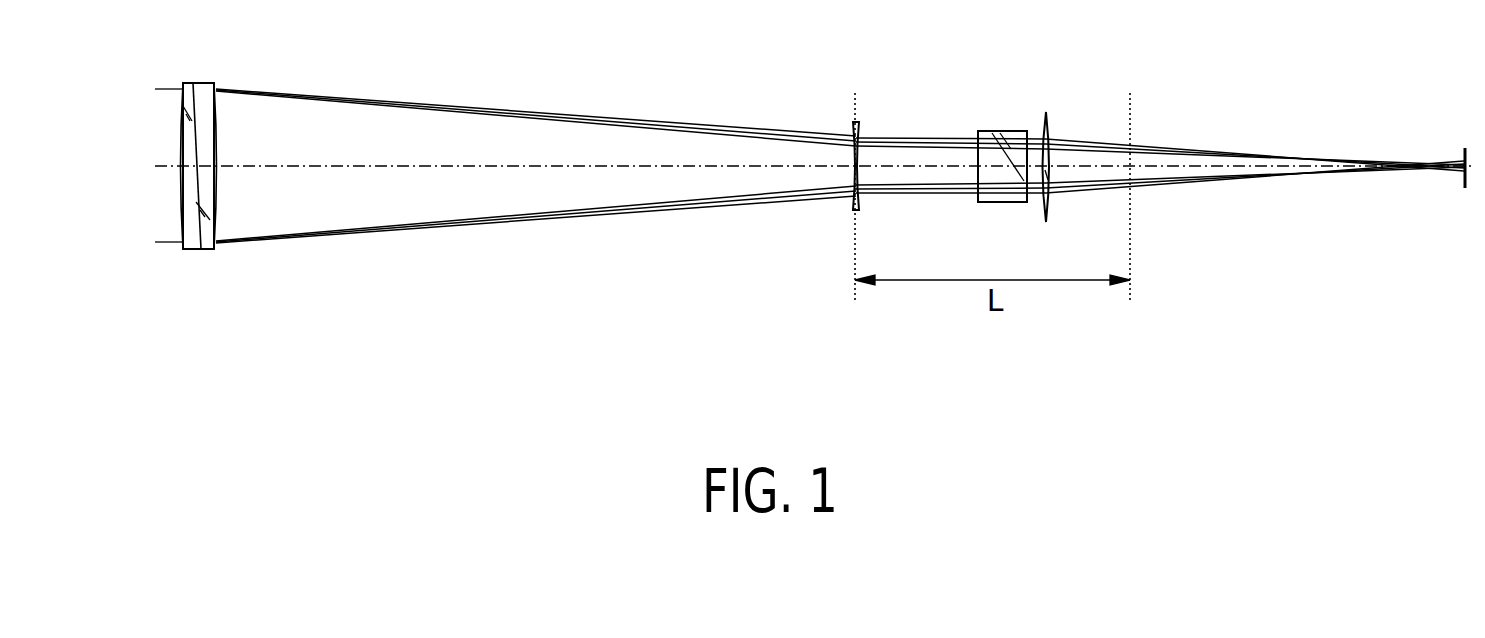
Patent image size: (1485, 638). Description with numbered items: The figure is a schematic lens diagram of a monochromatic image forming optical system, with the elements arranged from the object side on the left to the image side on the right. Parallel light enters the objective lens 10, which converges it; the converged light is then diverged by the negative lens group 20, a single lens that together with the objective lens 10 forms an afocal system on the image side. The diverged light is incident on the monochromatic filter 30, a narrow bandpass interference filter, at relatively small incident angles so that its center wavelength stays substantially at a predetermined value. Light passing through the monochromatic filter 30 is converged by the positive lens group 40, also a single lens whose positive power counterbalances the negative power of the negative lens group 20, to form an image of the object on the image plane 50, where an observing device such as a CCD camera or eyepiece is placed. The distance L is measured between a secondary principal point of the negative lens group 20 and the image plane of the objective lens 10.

The objective lens 10 is at (201, 82).
The negative lens group 20 is at (852, 122).
The monochromatic filter 30 is at (1000, 130).
The positive lens group 40 is at (1050, 113).
The image plane 50 is at (1464, 148).